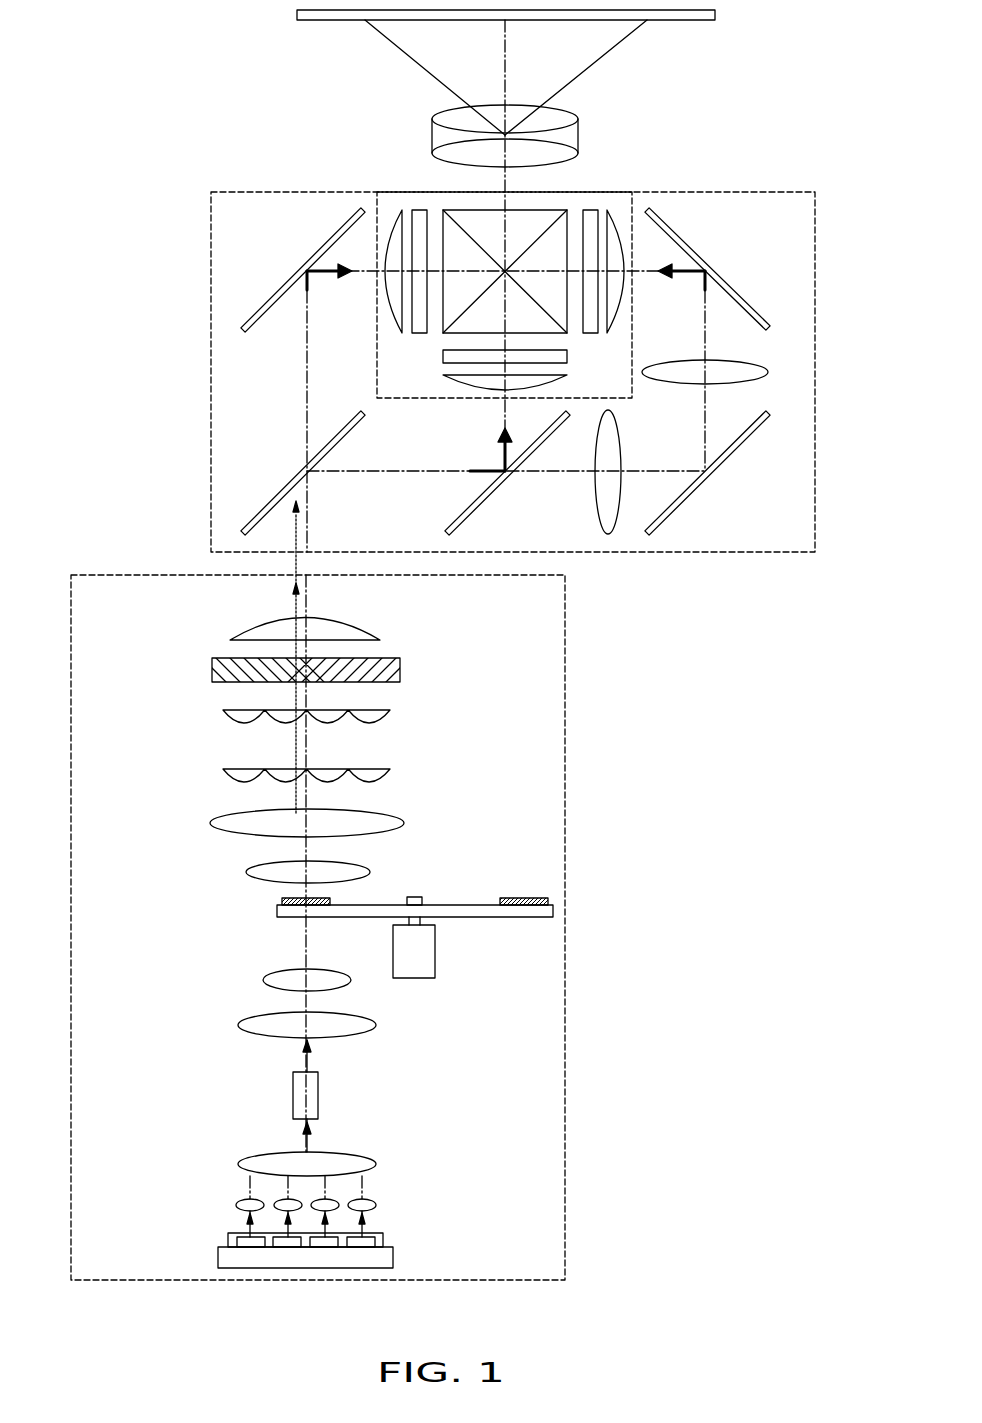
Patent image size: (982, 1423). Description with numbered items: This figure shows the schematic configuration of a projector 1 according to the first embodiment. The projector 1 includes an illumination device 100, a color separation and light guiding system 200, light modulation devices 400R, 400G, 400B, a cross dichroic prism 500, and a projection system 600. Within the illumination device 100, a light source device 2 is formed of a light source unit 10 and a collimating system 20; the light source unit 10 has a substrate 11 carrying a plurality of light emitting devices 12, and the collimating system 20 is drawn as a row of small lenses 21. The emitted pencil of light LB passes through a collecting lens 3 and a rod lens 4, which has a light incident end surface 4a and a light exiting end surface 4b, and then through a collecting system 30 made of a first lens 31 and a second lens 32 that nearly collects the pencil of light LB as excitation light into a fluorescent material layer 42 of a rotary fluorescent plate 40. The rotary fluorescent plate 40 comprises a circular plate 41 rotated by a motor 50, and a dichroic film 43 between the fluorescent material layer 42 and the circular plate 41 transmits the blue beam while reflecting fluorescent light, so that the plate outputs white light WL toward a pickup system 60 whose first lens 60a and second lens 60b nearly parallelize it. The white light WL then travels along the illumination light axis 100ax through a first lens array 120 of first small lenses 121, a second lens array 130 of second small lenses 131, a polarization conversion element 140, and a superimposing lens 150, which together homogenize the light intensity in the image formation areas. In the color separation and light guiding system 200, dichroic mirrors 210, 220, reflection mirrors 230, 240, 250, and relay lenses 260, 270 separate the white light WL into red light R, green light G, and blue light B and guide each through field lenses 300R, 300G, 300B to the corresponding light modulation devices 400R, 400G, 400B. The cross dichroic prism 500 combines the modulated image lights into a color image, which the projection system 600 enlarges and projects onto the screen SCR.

The projector 1 is at (152, 70).
The screen SCR is at (683, 20).
The projection system 600 is at (432, 128).
The cross dichroic prism 500 is at (563, 212).
The light modulation device 400R is at (420, 210).
The light modulation device 400G is at (447, 358).
The light modulation device 400B is at (590, 210).
The field lens 300R is at (393, 210).
The field lens 300G is at (447, 382).
The field lens 300B is at (615, 210).
The color separation and light guiding system 200 is at (757, 552).
The dichroic mirror 210 is at (272, 502).
The dichroic mirror 220 is at (487, 502).
The reflection mirror 230 is at (244, 318).
The reflection mirror 240 is at (728, 458).
The reflection mirror 250 is at (764, 318).
The relay lens 260 is at (596, 489).
The relay lens 270 is at (733, 361).
The red light R is at (318, 274).
The green light G is at (503, 453).
The blue light B is at (692, 274).
The white light WL is at (300, 527).
The illumination device 100 is at (565, 1035).
The illumination light axis 100ax is at (305, 567).
The superimposing lens 150 is at (370, 620).
The polarization conversion element 140 is at (382, 658).
The second lens array 130 is at (393, 713).
The second small lens 131 is at (233, 722).
The first lens array 120 is at (393, 773).
The first small lens 121 is at (195, 791).
The pickup system 60 is at (131, 841).
The first lens 60a is at (250, 877).
The second lens 60b is at (220, 833).
The rotary fluorescent plate 40 is at (444, 884).
The circular plate 41 is at (553, 912).
The fluorescent material layer 42 is at (550, 900).
The dichroic film 43 is at (553, 905).
The motor 50 is at (437, 942).
The collecting system 30 is at (143, 975).
The first lens 31 is at (250, 1028).
The second lens 32 is at (267, 983).
The pencil of light LB is at (305, 1062).
The rod lens 4 is at (302, 1095).
The light incident end surface 4a is at (318, 1119).
The light exiting end surface 4b is at (318, 1072).
The collecting lens 3 is at (367, 1163).
The light source device 2 is at (143, 1190).
The collimating system 20 is at (298, 1206).
The collimator lens 21 is at (368, 1202).
The light source unit 10 is at (298, 1250).
The substrate 11 is at (388, 1257).
The light emitting device 12 is at (372, 1242).